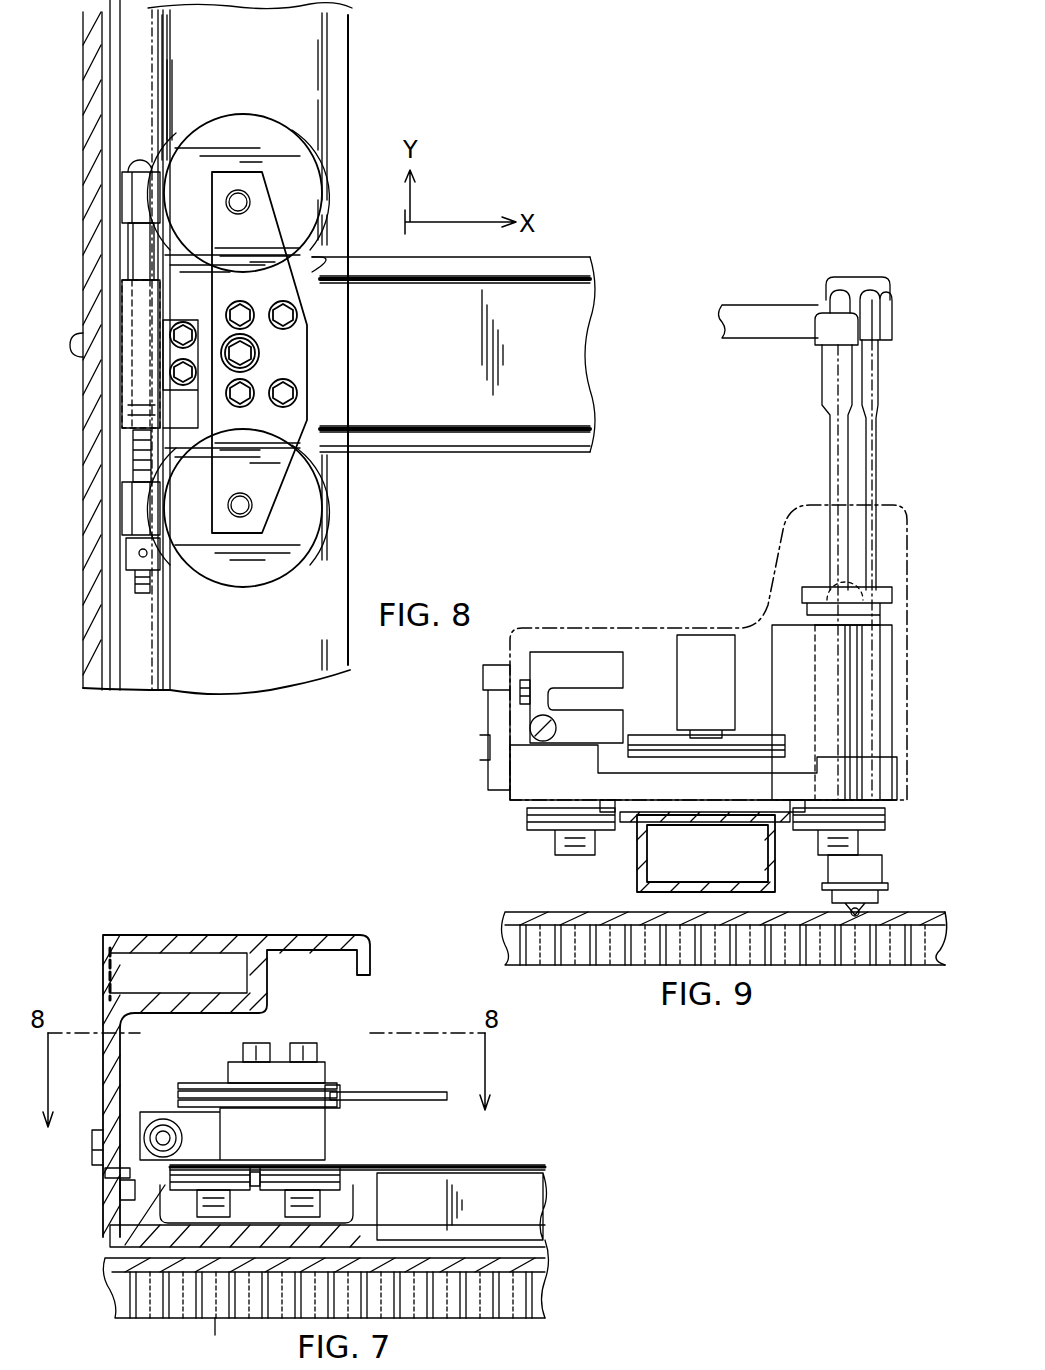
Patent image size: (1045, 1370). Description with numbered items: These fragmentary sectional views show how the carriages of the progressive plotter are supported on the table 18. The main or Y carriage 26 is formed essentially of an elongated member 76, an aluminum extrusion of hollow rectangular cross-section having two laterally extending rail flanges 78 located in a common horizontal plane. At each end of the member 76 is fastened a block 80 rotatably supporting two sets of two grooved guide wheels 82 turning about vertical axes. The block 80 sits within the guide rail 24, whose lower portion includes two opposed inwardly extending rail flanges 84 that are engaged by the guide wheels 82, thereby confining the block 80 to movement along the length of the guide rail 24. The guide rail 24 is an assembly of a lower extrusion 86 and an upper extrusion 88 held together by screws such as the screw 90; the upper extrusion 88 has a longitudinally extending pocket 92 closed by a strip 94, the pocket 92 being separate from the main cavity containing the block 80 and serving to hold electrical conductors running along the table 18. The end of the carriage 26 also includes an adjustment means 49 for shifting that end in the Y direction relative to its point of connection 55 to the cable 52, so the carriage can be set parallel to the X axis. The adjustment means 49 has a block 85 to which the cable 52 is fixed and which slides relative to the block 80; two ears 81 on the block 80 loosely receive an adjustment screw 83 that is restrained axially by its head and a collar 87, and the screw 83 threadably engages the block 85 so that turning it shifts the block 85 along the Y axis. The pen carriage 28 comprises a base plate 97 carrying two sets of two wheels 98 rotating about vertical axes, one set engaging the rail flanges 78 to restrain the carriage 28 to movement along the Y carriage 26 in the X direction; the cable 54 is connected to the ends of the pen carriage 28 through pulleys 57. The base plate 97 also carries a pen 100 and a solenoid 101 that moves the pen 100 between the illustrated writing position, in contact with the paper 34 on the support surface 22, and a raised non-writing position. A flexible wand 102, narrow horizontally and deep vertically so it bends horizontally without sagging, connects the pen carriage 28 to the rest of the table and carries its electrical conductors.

In FIG. 7, the table 18 is at (226, 1318).
In FIG. 9, the support surface 22 is at (578, 910).
In FIG. 7, the support surface 22 is at (108, 1262).
In FIG. 8, the guide rail 24 is at (349, 72).
In FIG. 7, the guide rail 24 is at (263, 934).
In FIG. 8, the Y carriage 26 is at (543, 258).
In FIG. 9, the Y carriage 26 is at (640, 848).
In FIG. 7, the Y carriage 26 is at (493, 1164).
In FIG. 9, the pen carriage 28 is at (606, 625).
In FIG. 9, the paper 34 is at (918, 910).
In FIG. 7, the paper 34 is at (545, 1258).
In FIG. 8, the adjustment means 49 is at (138, 306).
In FIG. 8, the cable 52 is at (168, 38).
In FIG. 7, the cable 52 is at (172, 1120).
In FIG. 8, the cable 54 is at (167, 84).
In FIG. 9, the cable 54 is at (640, 733).
In FIG. 7, the cable 54 is at (178, 1090).
In FIG. 8, the point of connection 55 is at (168, 345).
In FIG. 8, the pulley 57 is at (242, 122).
In FIG. 9, the pulley 57 is at (752, 733).
In FIG. 7, the pulley 57 is at (338, 1092).
In FIG. 8, the elongated member 76 is at (418, 258).
In FIG. 9, the elongated member 76 is at (640, 868).
In FIG. 7, the elongated member 76 is at (433, 1164).
In FIG. 9, the rail flange 78 is at (608, 808).
In FIG. 8, the block 80 is at (320, 265).
In FIG. 7, the block 80 is at (325, 1128).
In FIG. 8, the ear 81 is at (122, 206).
In FIG. 8, the guide wheel 82 is at (178, 146).
In FIG. 7, the guide wheel 82 is at (255, 1172).
In FIG. 8, the adjustment screw 83 is at (133, 470).
In FIG. 7, the adjustment screw 83 is at (130, 1168).
In FIG. 8, the rail flange 84 is at (160, 8).
In FIG. 7, the rail flange 84 is at (195, 1175).
In FIG. 8, the block 85 is at (128, 405).
In FIG. 7, the extrusion 86 is at (125, 1240).
In FIG. 8, the collar 87 is at (126, 556).
In FIG. 7, the collar 87 is at (130, 1150).
In FIG. 7, the upper extrusion 88 is at (218, 934).
In FIG. 8, the screw 90 is at (72, 342).
In FIG. 7, the screw 90 is at (98, 1142).
In FIG. 7, the pocket 92 is at (140, 952).
In FIG. 7, the strip 94 is at (105, 966).
In FIG. 9, the base plate 97 is at (902, 768).
In FIG. 9, the wheel 98 is at (527, 826).
In FIG. 9, the pen 100 is at (884, 870).
In FIG. 9, the solenoid 101 is at (893, 655).
In FIG. 9, the flexible wand 102 is at (785, 305).